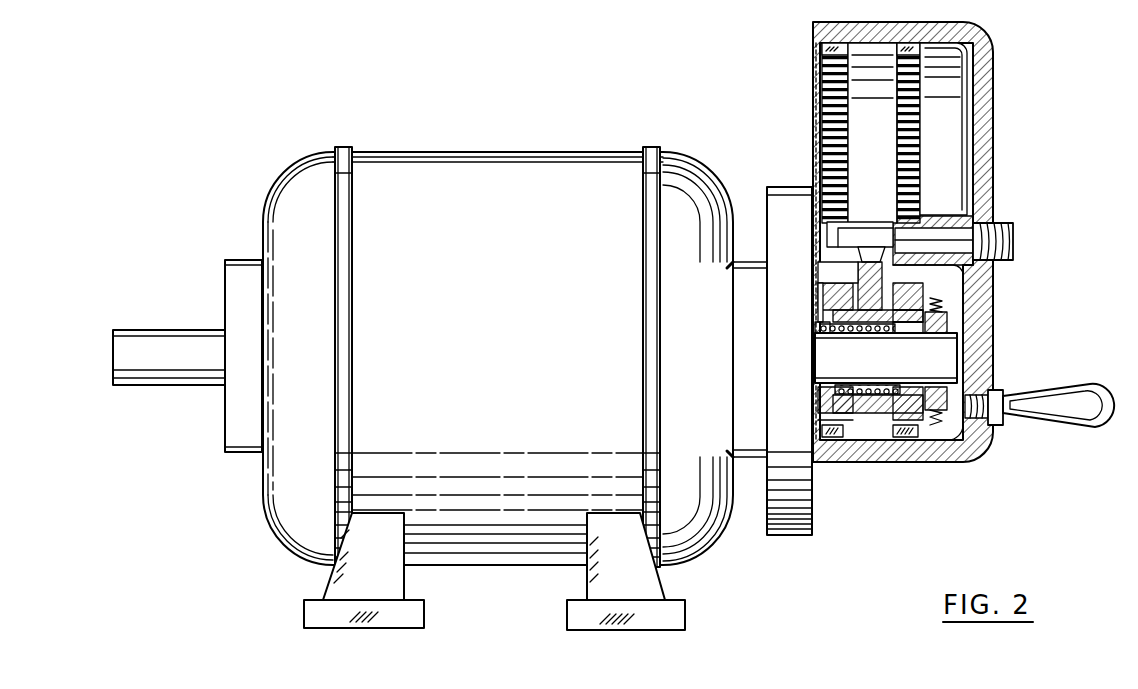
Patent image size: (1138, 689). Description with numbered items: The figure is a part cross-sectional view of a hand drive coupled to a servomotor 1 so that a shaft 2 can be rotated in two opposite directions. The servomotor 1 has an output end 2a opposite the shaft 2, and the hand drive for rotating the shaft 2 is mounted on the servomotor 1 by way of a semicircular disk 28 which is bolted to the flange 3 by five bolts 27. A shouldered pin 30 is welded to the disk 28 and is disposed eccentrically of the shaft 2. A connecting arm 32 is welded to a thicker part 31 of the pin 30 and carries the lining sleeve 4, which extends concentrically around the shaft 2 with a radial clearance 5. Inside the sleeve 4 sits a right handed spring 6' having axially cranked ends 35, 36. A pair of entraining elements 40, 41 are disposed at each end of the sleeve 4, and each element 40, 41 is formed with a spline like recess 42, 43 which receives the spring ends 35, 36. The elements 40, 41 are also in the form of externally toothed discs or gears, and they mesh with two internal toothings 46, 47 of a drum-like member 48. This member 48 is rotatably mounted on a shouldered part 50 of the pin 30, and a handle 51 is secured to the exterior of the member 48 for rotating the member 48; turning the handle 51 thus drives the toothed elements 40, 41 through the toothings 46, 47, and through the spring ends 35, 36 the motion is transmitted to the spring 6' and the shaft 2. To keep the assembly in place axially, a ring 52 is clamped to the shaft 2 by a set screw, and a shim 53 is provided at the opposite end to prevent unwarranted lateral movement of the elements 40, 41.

The servomotor 1 is at (493, 168).
The shaft 2 is at (958, 353).
The output end 2a is at (162, 345).
The flange 3 is at (812, 514).
The lining sleeve 4 is at (925, 303).
The radial clearance 5 is at (948, 395).
The right handed spring 6' is at (867, 366).
The bolts 27 is at (824, 240).
The semicircular disk 28 is at (812, 106).
The shouldered pin 30 is at (855, 222).
The thicker part 31 is at (873, 245).
The connecting arm 32 is at (826, 268).
The spring end 35 is at (912, 318).
The spring end 36 is at (826, 333).
The entraining element 40 is at (905, 317).
The entraining element 41 is at (826, 300).
The spline like recess 42 is at (918, 328).
The spline like recess 43 is at (826, 340).
The internal toothing 46 is at (908, 438).
The internal toothing 47 is at (832, 438).
The drum-like member 48 is at (962, 448).
The shouldered part 50 is at (936, 240).
The handle 51 is at (1083, 414).
The ring 52 is at (965, 395).
The shim 53 is at (830, 318).